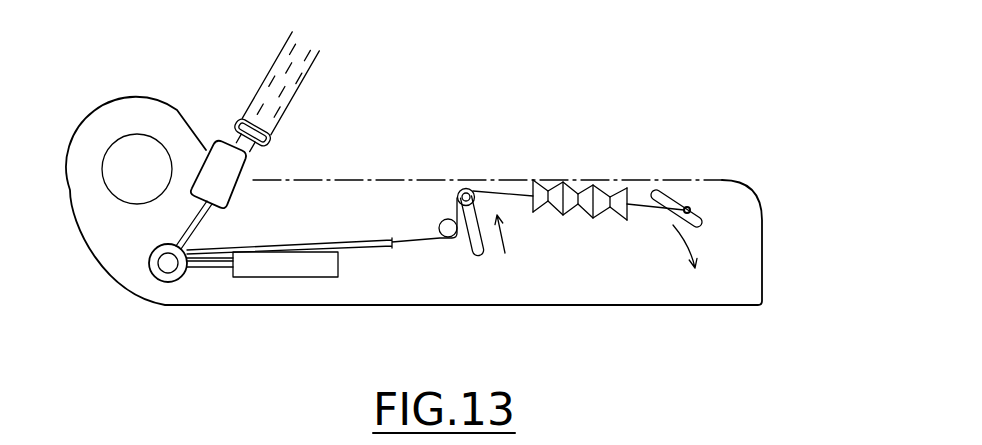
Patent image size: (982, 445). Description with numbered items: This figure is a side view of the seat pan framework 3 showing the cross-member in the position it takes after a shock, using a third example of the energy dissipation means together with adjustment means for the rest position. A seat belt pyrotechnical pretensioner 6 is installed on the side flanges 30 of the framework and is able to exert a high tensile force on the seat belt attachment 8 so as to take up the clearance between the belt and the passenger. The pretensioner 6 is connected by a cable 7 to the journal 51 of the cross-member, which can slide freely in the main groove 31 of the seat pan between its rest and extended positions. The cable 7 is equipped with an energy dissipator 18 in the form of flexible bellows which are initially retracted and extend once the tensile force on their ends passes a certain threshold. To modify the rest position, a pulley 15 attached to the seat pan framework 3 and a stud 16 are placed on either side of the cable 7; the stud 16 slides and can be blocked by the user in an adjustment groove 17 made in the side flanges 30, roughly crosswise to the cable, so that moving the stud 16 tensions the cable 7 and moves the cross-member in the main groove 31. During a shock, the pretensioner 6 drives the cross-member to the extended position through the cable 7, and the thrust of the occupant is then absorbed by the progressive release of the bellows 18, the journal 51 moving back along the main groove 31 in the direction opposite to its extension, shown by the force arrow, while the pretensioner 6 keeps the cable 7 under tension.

The seat pan framework 3 is at (518, 107).
The seat belt pyrotechnical pretensioner 6 is at (257, 275).
The cable 7 is at (370, 245).
The seat belt attachment 8 is at (203, 166).
The pulley 15 is at (440, 222).
The stud 16 is at (468, 188).
The adjustment groove 17 is at (472, 247).
The energy dissipator 18 is at (567, 182).
The side flanges 30 is at (615, 290).
The main groove 31 is at (673, 195).
The journal 51 is at (690, 208).